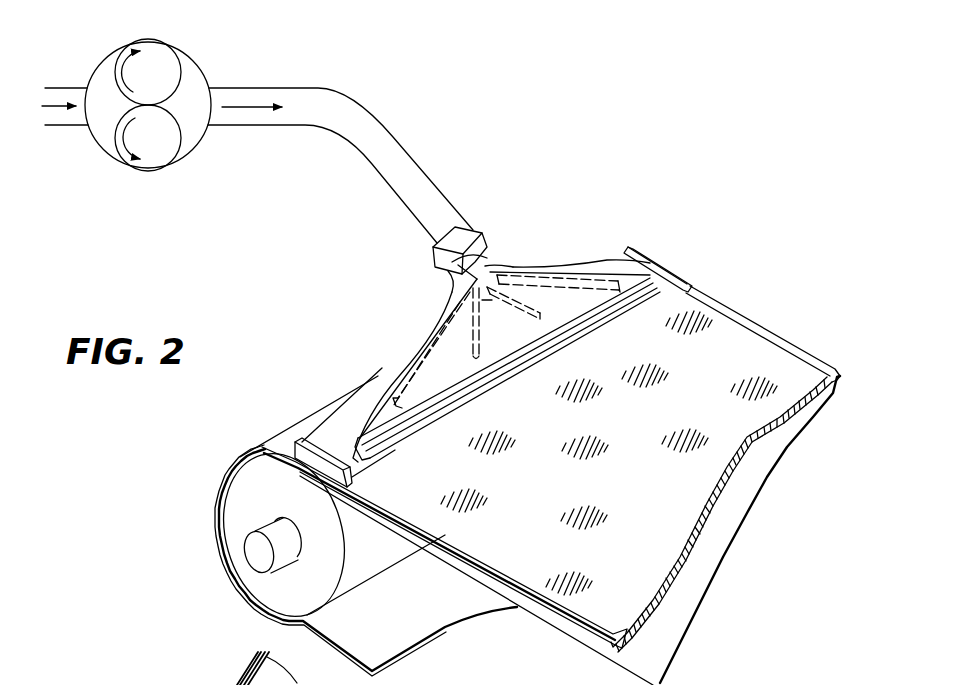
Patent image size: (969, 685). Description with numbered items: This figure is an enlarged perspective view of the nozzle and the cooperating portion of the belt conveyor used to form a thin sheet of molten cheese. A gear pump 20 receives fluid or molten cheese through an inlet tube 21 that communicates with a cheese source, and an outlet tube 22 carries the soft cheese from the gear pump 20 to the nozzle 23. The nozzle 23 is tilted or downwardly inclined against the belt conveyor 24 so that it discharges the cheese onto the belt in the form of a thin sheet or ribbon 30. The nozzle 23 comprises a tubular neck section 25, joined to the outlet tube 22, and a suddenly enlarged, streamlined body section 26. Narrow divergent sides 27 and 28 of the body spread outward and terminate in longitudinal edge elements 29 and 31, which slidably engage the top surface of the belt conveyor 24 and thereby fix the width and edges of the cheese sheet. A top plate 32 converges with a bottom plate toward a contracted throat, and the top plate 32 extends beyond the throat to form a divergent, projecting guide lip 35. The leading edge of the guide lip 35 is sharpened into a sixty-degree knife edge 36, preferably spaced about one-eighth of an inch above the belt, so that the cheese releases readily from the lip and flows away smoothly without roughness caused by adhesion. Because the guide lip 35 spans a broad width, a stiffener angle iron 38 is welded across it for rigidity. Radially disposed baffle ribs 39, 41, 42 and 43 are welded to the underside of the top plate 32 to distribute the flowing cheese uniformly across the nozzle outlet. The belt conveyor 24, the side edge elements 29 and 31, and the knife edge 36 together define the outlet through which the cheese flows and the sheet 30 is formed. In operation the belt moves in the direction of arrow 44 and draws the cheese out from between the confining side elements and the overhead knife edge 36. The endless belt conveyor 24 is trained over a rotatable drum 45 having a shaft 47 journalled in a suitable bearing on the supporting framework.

The gear pump 20 is at (183, 62).
The inlet tube 21 is at (47, 97).
The outlet tube 22 is at (393, 142).
The nozzle 23 is at (406, 296).
The belt conveyor 24 is at (407, 530).
The tubular neck section 25 is at (470, 257).
The streamlined body section 26 is at (410, 338).
The divergent side 27 is at (370, 384).
The divergent side 28 is at (563, 262).
The longitudinal edge element 29 is at (303, 455).
The sheet or ribbon 30 is at (757, 345).
The longitudinal edge element 31 is at (655, 263).
The top plate 32 is at (484, 322).
The guide lip 35 is at (573, 347).
The knife edge 36 is at (473, 410).
The stiffener angle iron 38 is at (412, 423).
The baffle rib 39 is at (419, 386).
The baffle rib 41 is at (472, 349).
The baffle rib 42 is at (528, 312).
The baffle rib 43 is at (593, 288).
The arrow 44 is at (643, 655).
The rotatable drum 45 is at (243, 485).
The shaft 47 is at (262, 553).